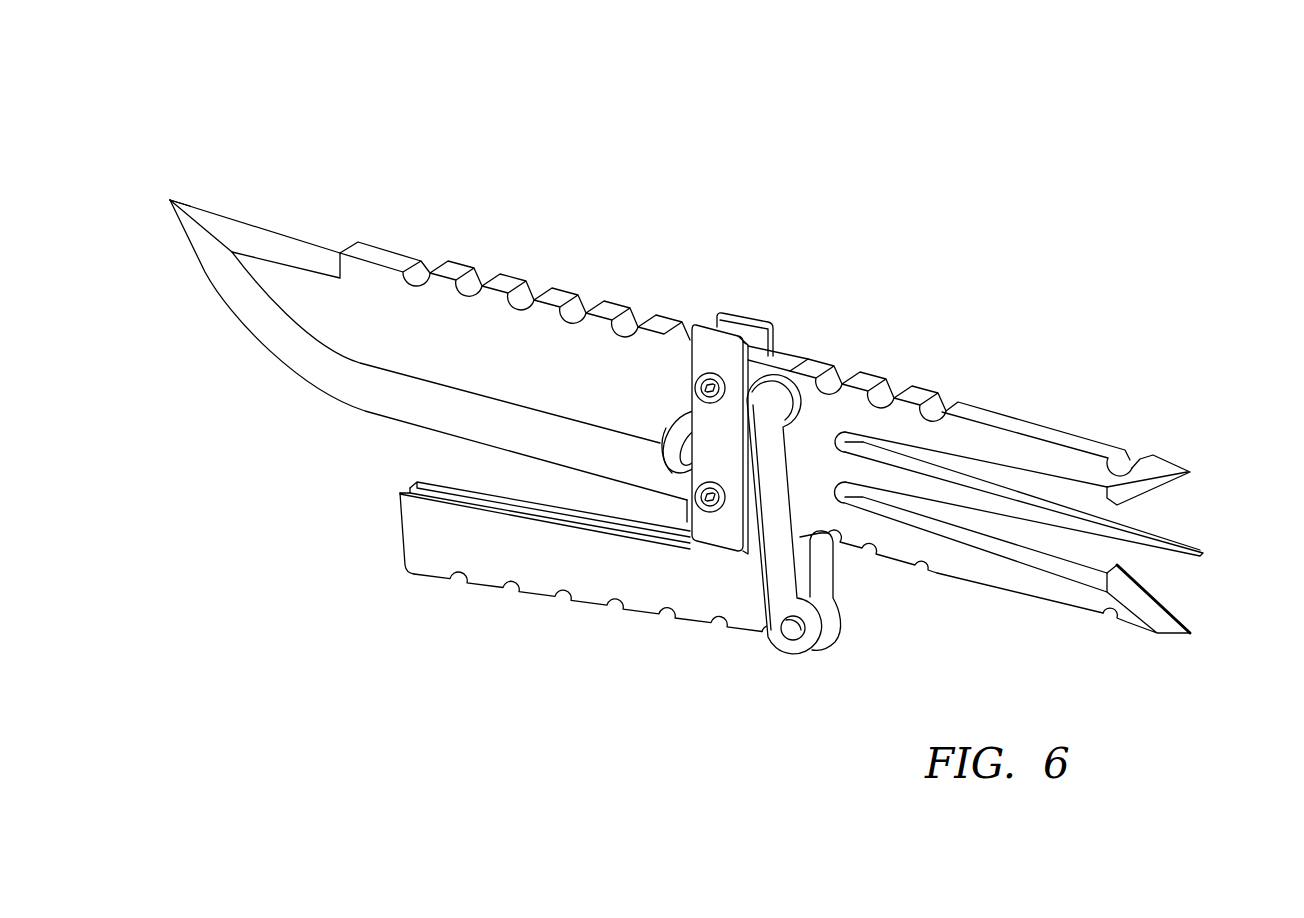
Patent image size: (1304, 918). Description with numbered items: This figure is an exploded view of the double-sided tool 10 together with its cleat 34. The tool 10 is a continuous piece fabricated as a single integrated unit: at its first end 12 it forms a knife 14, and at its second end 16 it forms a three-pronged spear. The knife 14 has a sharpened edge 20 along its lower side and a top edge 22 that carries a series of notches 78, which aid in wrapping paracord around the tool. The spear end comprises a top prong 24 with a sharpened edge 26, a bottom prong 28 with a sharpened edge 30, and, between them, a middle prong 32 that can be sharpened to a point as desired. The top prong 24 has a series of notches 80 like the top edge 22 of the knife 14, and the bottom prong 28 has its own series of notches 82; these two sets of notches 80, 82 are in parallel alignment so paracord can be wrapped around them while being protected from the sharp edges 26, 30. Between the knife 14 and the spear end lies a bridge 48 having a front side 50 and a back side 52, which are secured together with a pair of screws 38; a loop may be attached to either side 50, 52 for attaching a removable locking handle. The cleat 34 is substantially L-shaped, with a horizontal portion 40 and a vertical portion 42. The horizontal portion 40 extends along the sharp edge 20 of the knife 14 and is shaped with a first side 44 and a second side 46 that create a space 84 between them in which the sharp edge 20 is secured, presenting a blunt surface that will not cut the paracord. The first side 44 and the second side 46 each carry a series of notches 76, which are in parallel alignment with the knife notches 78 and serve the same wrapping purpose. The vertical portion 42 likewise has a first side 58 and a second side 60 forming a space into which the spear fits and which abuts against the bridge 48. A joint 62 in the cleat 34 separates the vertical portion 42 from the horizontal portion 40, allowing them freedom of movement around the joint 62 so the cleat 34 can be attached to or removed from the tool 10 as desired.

The double-sided tool 10 is at (578, 202).
The first end 12 is at (182, 190).
The knife 14 is at (389, 329).
The second end 16 is at (1206, 457).
The sharpened edge 20 is at (303, 375).
The top edge 22 is at (293, 243).
The top prong 24 is at (1040, 455).
The sharpened edge 26 is at (1145, 490).
The bottom prong 28 is at (1033, 598).
The sharpened edge 30 is at (1170, 607).
The middle prong 32 is at (1205, 550).
The cleat 34 is at (690, 655).
The screws 38 is at (698, 390).
The horizontal portion 40 is at (428, 578).
The vertical portion 42 is at (802, 497).
The first side 44 is at (410, 535).
The second side 46 is at (445, 483).
The bridge 48 is at (718, 308).
The front side 50 is at (705, 352).
The back side 52 is at (770, 318).
The first side 58 is at (800, 414).
The second side 60 is at (814, 347).
The joint 62 is at (793, 640).
The notches 76 is at (620, 615).
The notches 78 is at (482, 272).
The notches 80 is at (945, 397).
The notches 82 is at (925, 590).
The space 84 is at (530, 512).